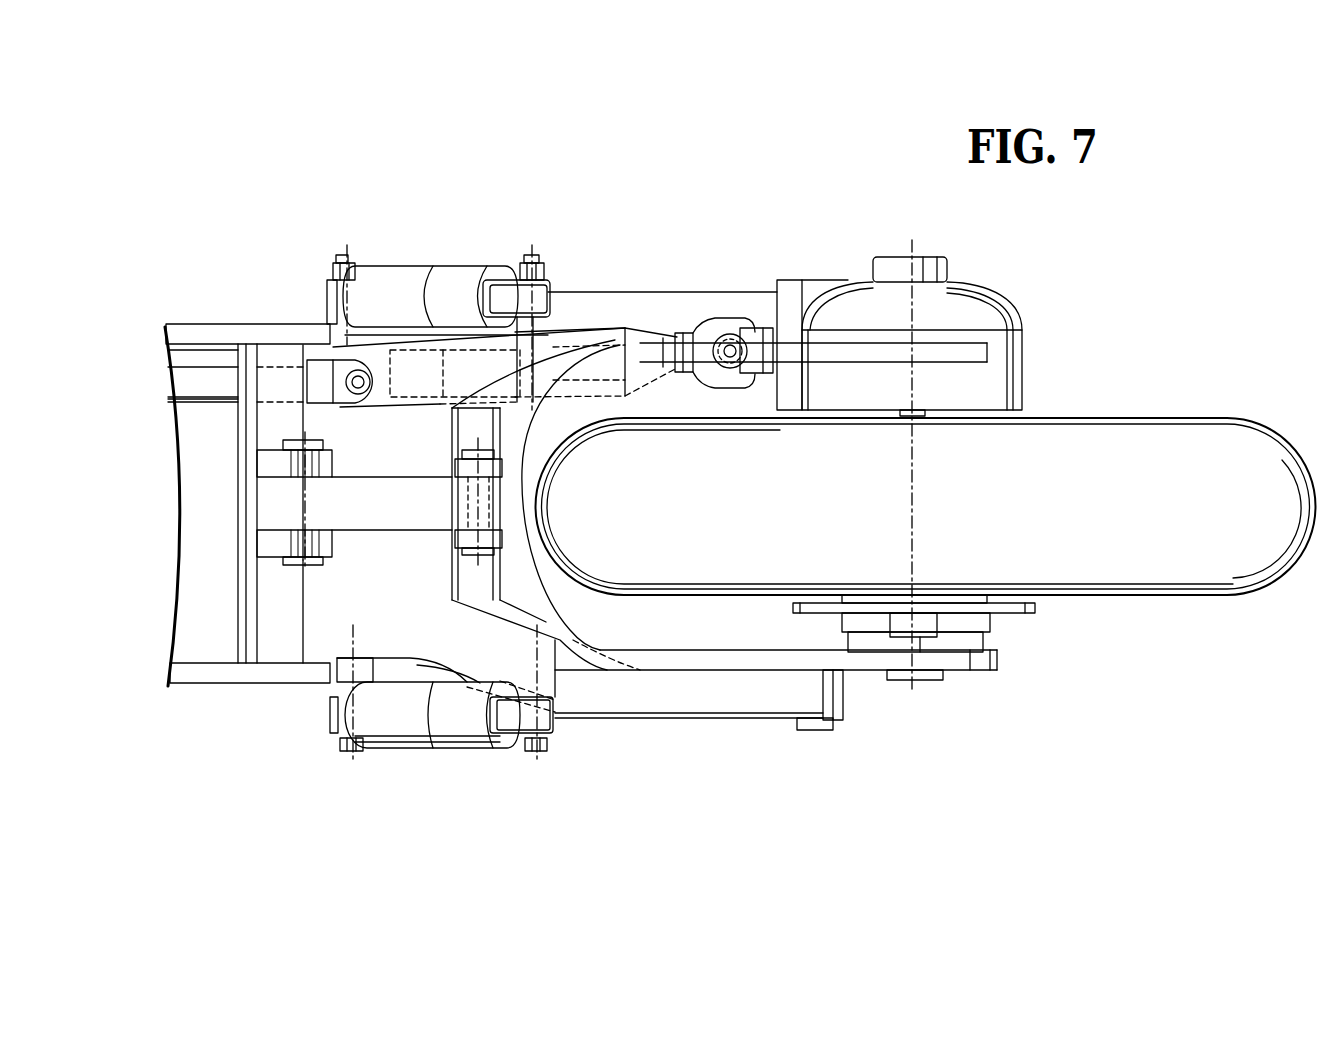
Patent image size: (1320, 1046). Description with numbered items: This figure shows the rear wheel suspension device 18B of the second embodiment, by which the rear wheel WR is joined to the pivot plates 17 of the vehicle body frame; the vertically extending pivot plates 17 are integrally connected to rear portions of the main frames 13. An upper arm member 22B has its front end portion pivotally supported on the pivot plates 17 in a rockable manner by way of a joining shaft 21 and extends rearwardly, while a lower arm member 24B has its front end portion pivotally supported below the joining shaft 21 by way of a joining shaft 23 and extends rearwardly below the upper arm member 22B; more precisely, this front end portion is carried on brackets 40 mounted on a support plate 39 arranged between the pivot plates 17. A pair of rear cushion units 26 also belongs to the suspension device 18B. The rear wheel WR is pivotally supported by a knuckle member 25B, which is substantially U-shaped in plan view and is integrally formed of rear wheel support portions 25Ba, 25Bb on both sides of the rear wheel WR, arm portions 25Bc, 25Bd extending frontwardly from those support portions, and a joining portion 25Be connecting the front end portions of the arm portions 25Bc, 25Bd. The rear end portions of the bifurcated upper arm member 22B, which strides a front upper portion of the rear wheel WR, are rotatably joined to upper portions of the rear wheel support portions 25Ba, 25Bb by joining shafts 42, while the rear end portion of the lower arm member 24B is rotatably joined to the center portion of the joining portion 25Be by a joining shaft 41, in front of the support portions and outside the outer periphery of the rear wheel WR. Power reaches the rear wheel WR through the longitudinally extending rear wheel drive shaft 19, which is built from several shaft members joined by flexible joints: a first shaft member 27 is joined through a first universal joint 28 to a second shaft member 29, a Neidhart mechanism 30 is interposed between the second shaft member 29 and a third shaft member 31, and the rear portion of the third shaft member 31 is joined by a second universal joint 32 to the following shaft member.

The main frames 13 is at (177, 326).
The pivot plates 17 is at (297, 326).
The rear wheel drive shaft 19 is at (201, 352).
The joining shaft 21 is at (268, 657).
The upper arm member 22B is at (463, 658).
The joining shaft 23 is at (290, 565).
The lower arm member 24B is at (362, 513).
The knuckle member 25B is at (873, 682).
The rear wheel support portion 25Ba is at (958, 385).
The rear wheel support portion 25Bb is at (1000, 660).
The arm portion 25Bc is at (663, 355).
The arm portion 25Bd is at (738, 662).
The joining portion 25Be is at (500, 573).
The rear cushion units 26 is at (393, 283).
The first shaft member 27 is at (205, 403).
The first universal joint 28 is at (358, 336).
The second shaft member 29 is at (420, 370).
The Neidhart mechanism 30 is at (578, 318).
The third shaft member 31 is at (643, 338).
The second universal joint 32 is at (717, 400).
The support plate 39 is at (237, 543).
The brackets 40 is at (262, 457).
The joining shaft 41 is at (487, 488).
The joining shafts 42 is at (800, 722).
The rear wheel suspension device 18B is at (596, 730).
The rear wheel WR is at (1158, 437).